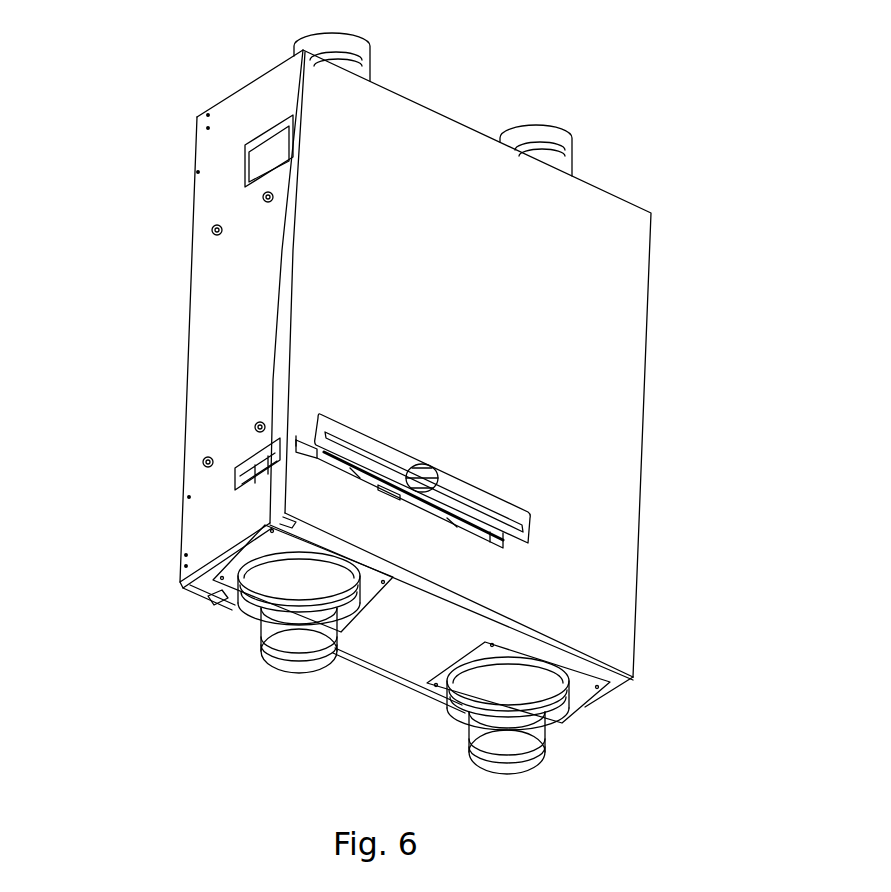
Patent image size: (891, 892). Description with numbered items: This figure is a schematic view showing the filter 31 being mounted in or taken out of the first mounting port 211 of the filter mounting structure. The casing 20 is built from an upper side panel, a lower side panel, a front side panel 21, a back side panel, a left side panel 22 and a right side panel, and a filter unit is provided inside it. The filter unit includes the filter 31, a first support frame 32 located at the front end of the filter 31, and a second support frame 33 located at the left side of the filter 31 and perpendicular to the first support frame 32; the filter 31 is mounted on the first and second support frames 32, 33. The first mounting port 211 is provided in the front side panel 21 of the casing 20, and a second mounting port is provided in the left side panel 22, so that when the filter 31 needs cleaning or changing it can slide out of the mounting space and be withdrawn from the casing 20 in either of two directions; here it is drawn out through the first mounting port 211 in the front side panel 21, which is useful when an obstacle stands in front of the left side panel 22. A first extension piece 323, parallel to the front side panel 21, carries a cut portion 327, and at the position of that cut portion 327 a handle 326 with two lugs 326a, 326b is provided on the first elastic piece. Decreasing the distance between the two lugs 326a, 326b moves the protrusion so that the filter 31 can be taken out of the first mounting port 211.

The casing 20 is at (618, 193).
The front side panel 21 is at (602, 332).
The left side panel 22 is at (225, 305).
The first mounting port 211 is at (505, 545).
The filter 31 is at (274, 515).
The first support frame 32 is at (591, 453).
The first extension piece 323 is at (330, 425).
The handle 326 is at (591, 499).
The lug 326a is at (440, 480).
The lug 326b is at (525, 516).
The cut portion 327 is at (436, 468).
The second support frame 33 is at (318, 447).